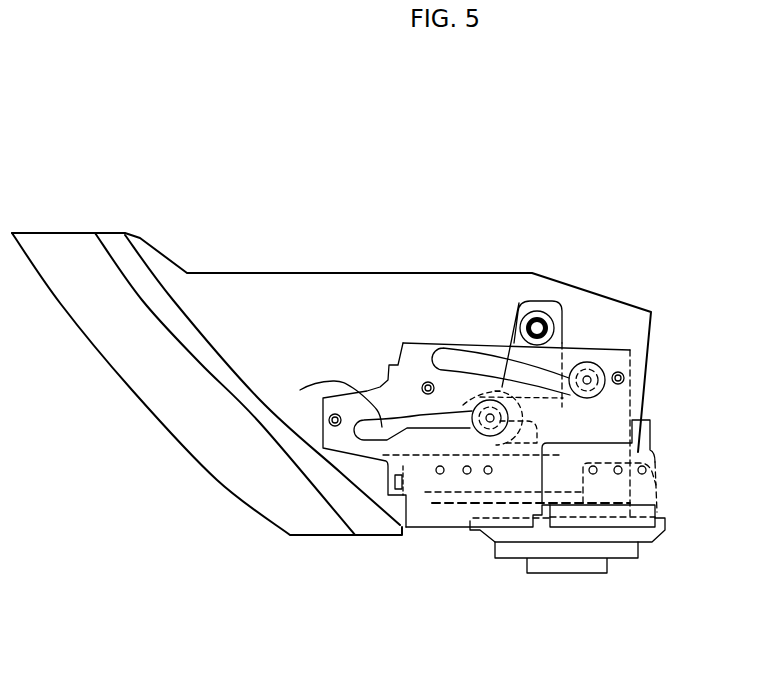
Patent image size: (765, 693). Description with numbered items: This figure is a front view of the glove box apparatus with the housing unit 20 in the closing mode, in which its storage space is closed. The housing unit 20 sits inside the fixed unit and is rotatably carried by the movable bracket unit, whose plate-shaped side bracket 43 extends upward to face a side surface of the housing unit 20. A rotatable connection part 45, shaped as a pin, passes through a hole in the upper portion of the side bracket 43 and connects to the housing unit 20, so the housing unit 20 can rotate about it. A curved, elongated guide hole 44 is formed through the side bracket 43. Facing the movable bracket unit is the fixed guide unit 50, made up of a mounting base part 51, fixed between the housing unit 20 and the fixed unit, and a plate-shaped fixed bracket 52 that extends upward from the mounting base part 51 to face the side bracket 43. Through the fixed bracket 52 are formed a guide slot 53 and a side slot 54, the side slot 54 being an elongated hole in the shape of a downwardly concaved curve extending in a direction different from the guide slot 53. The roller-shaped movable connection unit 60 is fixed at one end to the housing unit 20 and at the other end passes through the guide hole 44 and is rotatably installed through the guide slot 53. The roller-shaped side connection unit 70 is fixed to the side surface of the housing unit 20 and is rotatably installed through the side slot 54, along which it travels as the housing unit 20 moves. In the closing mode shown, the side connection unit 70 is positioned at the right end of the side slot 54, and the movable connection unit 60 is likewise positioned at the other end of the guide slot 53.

The housing unit 20 is at (338, 295).
The side bracket 43 is at (526, 301).
The guide hole 44 is at (522, 440).
The rotatable connection part 45 is at (545, 317).
The fixed guide unit 50 is at (621, 545).
The mounting base part 51 is at (580, 528).
The fixed bracket 52 is at (340, 437).
The guide slot 53 is at (300, 390).
The side slot 54 is at (465, 352).
The movable connection unit 60 is at (563, 398).
The side connection unit 70 is at (594, 366).